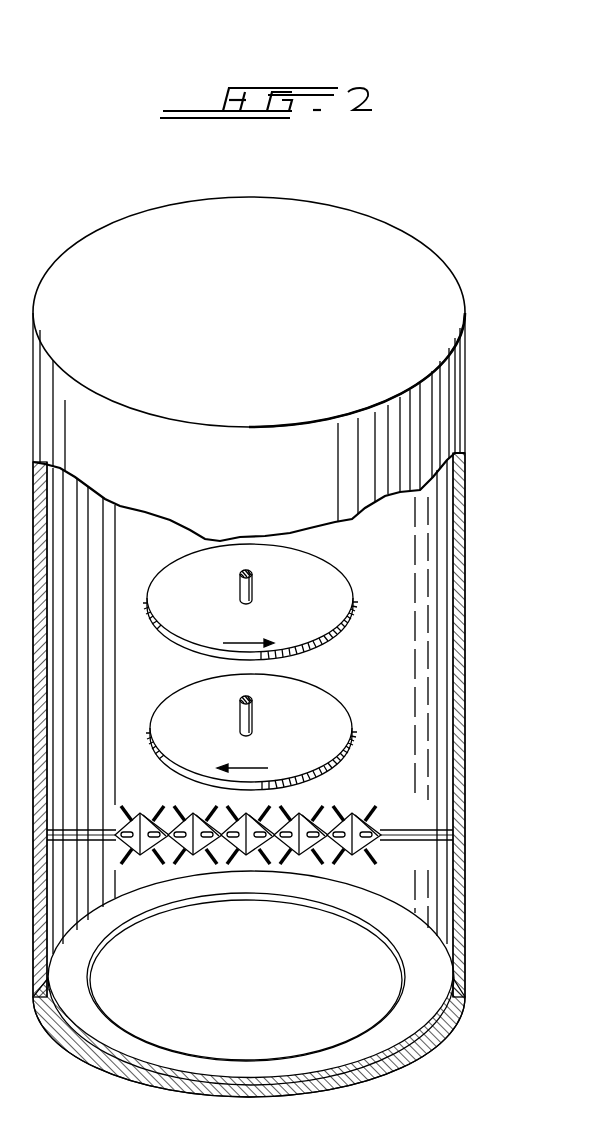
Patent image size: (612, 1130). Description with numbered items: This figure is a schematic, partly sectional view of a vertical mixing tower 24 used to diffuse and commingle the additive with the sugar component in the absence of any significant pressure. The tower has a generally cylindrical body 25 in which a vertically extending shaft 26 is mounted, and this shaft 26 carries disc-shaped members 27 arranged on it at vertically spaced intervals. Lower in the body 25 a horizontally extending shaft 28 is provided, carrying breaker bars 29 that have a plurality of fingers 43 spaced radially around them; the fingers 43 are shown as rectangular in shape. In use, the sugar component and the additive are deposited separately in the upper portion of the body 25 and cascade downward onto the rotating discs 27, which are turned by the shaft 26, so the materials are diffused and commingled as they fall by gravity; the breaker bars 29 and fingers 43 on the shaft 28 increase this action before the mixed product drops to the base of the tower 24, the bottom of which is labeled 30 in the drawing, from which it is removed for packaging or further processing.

The cover 24 is at (466, 288).
The container wall 25 is at (437, 535).
The pin 26 is at (253, 590).
The disc 27 is at (353, 603).
The shaft 28 is at (452, 834).
The agitator element 29 is at (363, 832).
The bottom 30 is at (432, 1012).
The spike 43 is at (376, 859).